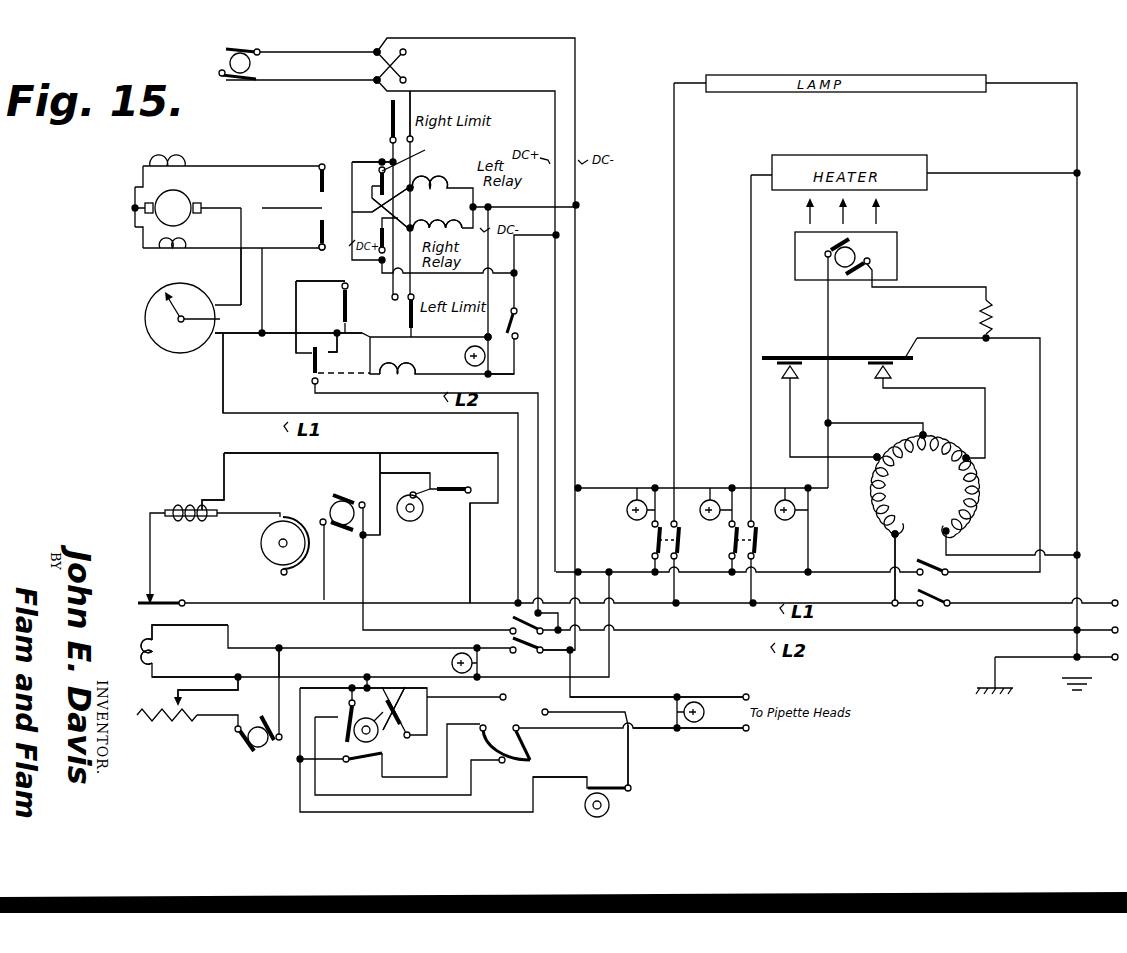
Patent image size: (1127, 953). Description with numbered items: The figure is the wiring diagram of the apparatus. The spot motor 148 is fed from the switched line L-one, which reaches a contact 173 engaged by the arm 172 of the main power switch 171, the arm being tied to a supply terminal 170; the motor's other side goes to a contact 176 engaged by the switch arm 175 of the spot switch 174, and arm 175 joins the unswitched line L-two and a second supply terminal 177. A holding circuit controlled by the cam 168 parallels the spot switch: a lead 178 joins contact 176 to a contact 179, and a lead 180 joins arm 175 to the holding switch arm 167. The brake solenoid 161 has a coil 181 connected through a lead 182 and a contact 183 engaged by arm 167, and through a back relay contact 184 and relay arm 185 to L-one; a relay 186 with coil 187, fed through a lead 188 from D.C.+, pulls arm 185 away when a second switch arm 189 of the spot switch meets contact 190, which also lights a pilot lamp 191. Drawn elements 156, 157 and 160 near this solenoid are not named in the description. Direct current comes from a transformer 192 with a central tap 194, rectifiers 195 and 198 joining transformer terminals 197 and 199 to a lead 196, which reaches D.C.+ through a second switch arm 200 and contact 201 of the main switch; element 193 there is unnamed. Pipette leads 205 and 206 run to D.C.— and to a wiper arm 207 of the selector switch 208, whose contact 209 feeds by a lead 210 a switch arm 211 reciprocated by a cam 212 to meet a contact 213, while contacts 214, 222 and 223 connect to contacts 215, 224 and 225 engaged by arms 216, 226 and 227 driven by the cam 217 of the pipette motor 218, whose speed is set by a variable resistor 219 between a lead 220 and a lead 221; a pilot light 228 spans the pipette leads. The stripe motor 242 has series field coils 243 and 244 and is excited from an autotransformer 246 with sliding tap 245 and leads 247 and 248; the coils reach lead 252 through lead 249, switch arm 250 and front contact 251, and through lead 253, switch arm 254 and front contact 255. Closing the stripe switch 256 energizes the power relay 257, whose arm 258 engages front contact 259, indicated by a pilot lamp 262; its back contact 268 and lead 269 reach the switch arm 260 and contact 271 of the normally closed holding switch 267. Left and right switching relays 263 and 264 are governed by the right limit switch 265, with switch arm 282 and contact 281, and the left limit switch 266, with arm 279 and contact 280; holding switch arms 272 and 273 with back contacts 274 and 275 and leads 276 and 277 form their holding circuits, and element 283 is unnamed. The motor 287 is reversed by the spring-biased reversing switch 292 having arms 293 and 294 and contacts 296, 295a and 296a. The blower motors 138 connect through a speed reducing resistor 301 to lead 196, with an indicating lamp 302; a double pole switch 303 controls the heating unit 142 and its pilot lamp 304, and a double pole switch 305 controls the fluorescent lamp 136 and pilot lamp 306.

The fluorescent lamp 136 is at (850, 74).
The heating unit 142 is at (920, 158).
The blower motors 138 is at (858, 250).
The spot motor 148 is at (332, 504).
The motor 156 is at (262, 548).
The commutator arc 157 is at (300, 566).
The solenoid core 160 is at (208, 518).
The brake solenoid 161 is at (178, 506).
The holding switch arm 167 is at (405, 465).
The cam 168 is at (410, 522).
The supply terminal 170 is at (1112, 600).
The main power switch 171 is at (930, 612).
The arm of main power switch 172 is at (938, 592).
The contact 173 is at (918, 607).
The spot switch 174 is at (515, 680).
The switch arm 175 is at (515, 606).
The contact 176 is at (505, 628).
The second supply terminal 177 is at (1116, 628).
The lead 178 is at (378, 462).
The contact 179 is at (446, 481).
The lead 180 is at (471, 545).
The solenoid coil 181 is at (192, 504).
The lead 182 is at (236, 452).
The contact 183 is at (438, 498).
The back relay contact 184 is at (160, 597).
The relay arm 185 is at (142, 598).
The relay 186 is at (146, 650).
The relay coil 187 is at (152, 647).
The lead 188 is at (192, 676).
The second switch arm 189 is at (524, 683).
The contact 190 is at (510, 654).
The pilot lamp 191 is at (455, 650).
The transformer 192 is at (932, 498).
The winding tap 193 is at (885, 532).
The central tap 194 is at (928, 438).
The rectifier 195 is at (800, 374).
The lead 196 is at (1040, 344).
The transformer terminal 197 is at (872, 457).
The second rectifier 198 is at (893, 372).
The transformer terminal 199 is at (970, 462).
The second switch arm 200 is at (935, 562).
The contact 201 is at (915, 565).
The lead 205 is at (714, 694).
The lead 206 is at (732, 732).
The wiper arm 207 is at (528, 756).
The selector switch 208 is at (520, 782).
The contact 209 is at (541, 712).
The lead 210 is at (632, 760).
The switch arm 211 is at (632, 786).
The cam 212 is at (610, 807).
The contact 213 is at (598, 772).
The contact 214 is at (502, 764).
The contact 215 is at (334, 720).
The arm 216 is at (344, 742).
The cam 217 is at (378, 738).
The pipette motor 218 is at (250, 718).
The variable resistor 219 is at (170, 722).
The lead 220 is at (282, 665).
The lead 221 is at (176, 690).
The contact 222 is at (487, 742).
The contact 223 is at (498, 700).
The contact 224 is at (376, 768).
The contact 225 is at (403, 678).
The arm 226 is at (386, 770).
The arm 227 is at (384, 676).
The pilot light 228 is at (694, 724).
The stripe motor 242 is at (158, 222).
The series field coil 243 is at (183, 143).
The series field coil 244 is at (168, 258).
The sliding tap 245 is at (165, 312).
The autotransformer 246 is at (152, 344).
The lead 247 is at (222, 390).
The lead 248 is at (258, 335).
The lead 249 is at (262, 165).
The switch arm 250 is at (318, 180).
The front contact 251 is at (337, 190).
The lead 252 is at (262, 206).
The lead 253 is at (240, 258).
The switch arm 254 is at (318, 237).
The front contact 255 is at (330, 228).
The stripe switch 256 is at (533, 303).
The power relay 257 is at (462, 357).
The arm 258 is at (312, 386).
The front contact 259 is at (330, 356).
The switch arm 260 is at (340, 322).
The pilot lamp 262 is at (486, 338).
The left switching relay 263 is at (440, 180).
The right switching relay 264 is at (452, 220).
The right limit switch 265 is at (385, 124).
The left limit switch 266 is at (386, 307).
The holding switch 267 is at (338, 301).
The back contact 268 is at (306, 357).
The lead 269 is at (312, 281).
The contact 271 is at (398, 322).
The holding switch arm 272 is at (416, 155).
The holding switch arm 273 is at (401, 244).
The back contact 274 is at (378, 175).
The back contact 275 is at (339, 248).
The lead 276 is at (400, 214).
The lead 277 is at (408, 196).
The arm 279 is at (414, 302).
The contact 280 is at (394, 360).
The contact 281 is at (400, 108).
The switch arm 282 is at (389, 129).
The switch blade 283 is at (390, 102).
The motor 287 is at (228, 63).
The reversing switch 292 is at (368, 84).
The arm 293 is at (373, 78).
The arm 294 is at (375, 49).
The contact 295a is at (407, 52).
The contact 296 is at (340, 50).
The contact 296a is at (407, 80).
The speed reducing resistor 301 is at (994, 312).
The indicating lamp 302 is at (790, 496).
The double pole switch 303 is at (760, 538).
The pilot lamp 304 is at (711, 496).
The double pole switch 305 is at (652, 541).
The pilot lamp 306 is at (637, 496).